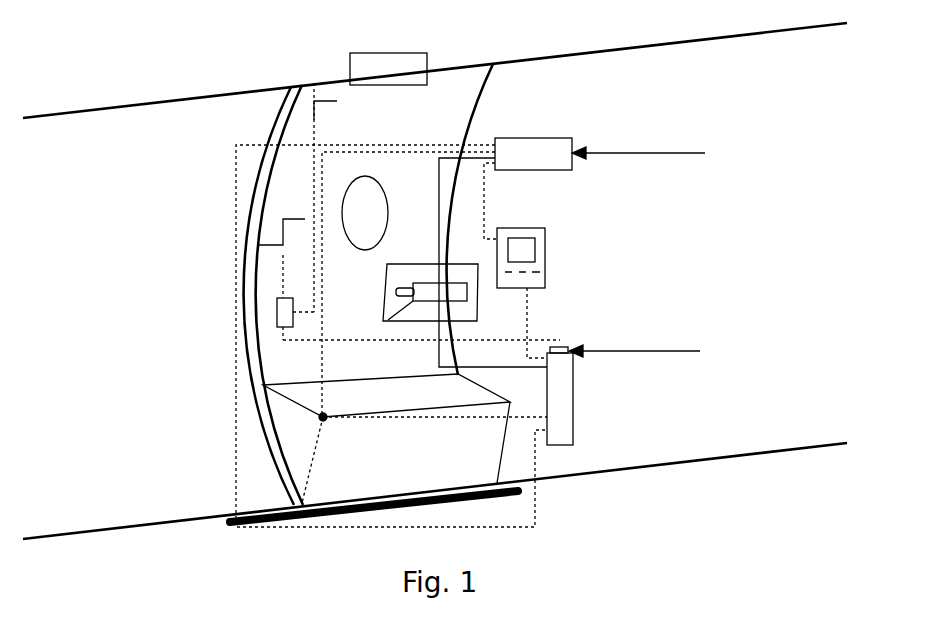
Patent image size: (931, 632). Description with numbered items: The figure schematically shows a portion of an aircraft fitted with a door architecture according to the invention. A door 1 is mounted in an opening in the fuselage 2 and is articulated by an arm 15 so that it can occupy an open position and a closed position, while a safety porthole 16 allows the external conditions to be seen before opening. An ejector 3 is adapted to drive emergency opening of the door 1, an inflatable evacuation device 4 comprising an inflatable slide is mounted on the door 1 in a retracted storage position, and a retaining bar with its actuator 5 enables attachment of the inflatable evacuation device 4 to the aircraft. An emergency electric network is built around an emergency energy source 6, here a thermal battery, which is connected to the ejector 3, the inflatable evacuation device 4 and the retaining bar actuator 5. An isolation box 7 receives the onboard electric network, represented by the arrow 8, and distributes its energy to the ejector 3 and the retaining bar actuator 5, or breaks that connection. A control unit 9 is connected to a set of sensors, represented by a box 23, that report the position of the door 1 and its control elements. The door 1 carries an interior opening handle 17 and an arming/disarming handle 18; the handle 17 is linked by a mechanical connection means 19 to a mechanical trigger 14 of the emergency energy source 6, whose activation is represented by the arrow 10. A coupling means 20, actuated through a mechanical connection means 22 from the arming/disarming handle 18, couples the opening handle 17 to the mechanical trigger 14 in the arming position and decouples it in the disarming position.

The door 1 is at (480, 88).
The fuselage 2 is at (143, 120).
The ejector 3 is at (387, 328).
The inflatable evacuation device 4 is at (297, 438).
The retaining bar actuator 5 is at (240, 530).
The emergency energy source 6 is at (573, 402).
The isolation box 7 is at (575, 139).
The onboard electric network 8 is at (639, 143).
The control unit 9 is at (519, 250).
The activation of the thermal battery 10 is at (638, 341).
The mechanical trigger 14 is at (562, 347).
The arm 15 is at (430, 272).
The safety porthole 16 is at (367, 176).
The interior opening handle 17 is at (258, 245).
The arming/disarming handle 18 is at (318, 83).
The mechanical connection means 19 is at (283, 287).
The coupling means 20 is at (277, 313).
The mechanical connection means 22 is at (315, 193).
The box 23 is at (387, 66).